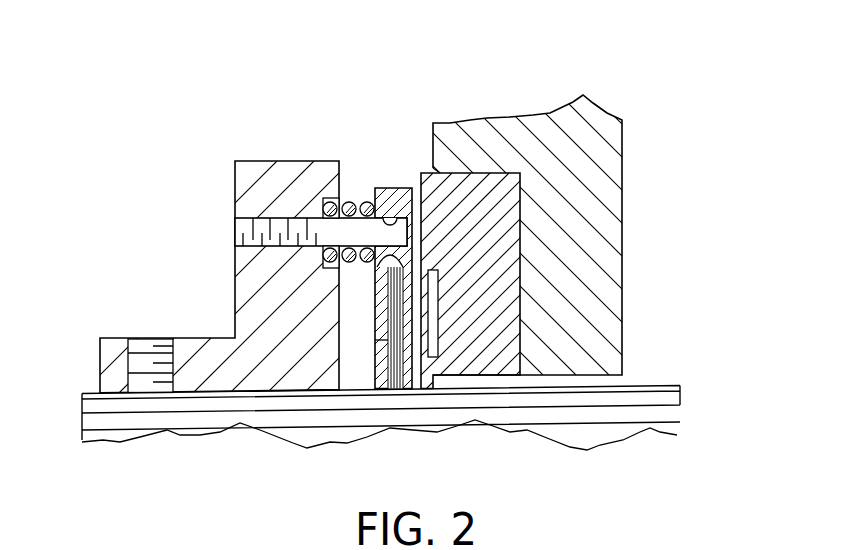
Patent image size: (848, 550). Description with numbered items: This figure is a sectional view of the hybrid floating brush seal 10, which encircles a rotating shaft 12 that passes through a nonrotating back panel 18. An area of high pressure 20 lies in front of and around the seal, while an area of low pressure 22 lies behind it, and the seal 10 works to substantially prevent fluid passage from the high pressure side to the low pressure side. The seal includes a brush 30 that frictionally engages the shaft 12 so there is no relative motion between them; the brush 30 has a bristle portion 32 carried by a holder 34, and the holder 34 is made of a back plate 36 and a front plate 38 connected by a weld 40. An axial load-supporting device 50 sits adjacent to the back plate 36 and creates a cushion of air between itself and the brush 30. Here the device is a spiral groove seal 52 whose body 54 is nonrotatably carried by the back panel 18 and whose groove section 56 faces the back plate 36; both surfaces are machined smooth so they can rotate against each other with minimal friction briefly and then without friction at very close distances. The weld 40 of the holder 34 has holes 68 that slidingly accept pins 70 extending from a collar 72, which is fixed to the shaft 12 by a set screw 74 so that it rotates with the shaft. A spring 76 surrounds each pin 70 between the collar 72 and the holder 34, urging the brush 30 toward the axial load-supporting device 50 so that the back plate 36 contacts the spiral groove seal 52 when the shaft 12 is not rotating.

The hybrid floating brush seal 10 is at (170, 136).
The shaft 12 is at (88, 408).
The back panel 18 is at (618, 134).
The area of high pressure 20 is at (199, 45).
The area of low pressure 22 is at (745, 335).
The brush 30 is at (372, 303).
The bristle portion 32 is at (400, 368).
The holder 34 is at (417, 320).
The back plate 36 is at (412, 370).
The front plate 38 is at (372, 318).
The weld 40 is at (392, 188).
The axial load-supporting device 50 is at (530, 353).
The spiral groove seal 52 is at (524, 235).
The body 54 is at (518, 208).
The groove section 56 is at (440, 292).
The holes 68 is at (398, 188).
The pin 70 is at (233, 230).
The collar 72 is at (233, 265).
The set screw 74 is at (138, 343).
The spring 76 is at (347, 201).